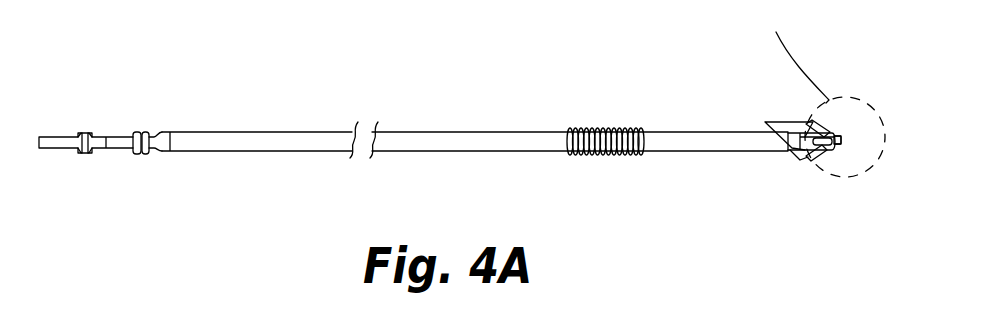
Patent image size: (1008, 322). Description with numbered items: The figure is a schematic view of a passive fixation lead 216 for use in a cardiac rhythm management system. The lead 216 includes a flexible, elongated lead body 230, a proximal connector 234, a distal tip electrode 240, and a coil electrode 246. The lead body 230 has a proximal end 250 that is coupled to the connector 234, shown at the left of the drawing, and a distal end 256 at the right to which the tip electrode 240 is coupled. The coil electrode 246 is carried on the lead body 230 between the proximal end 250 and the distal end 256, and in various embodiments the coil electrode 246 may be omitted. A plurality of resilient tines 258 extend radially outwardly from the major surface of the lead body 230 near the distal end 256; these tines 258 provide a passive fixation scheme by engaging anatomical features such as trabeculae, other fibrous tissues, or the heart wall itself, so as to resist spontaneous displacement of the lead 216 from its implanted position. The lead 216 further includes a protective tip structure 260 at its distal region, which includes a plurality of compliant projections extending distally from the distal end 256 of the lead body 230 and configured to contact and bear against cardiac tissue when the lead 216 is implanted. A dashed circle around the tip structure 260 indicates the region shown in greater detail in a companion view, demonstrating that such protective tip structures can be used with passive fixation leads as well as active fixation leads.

The passive fixation lead 216 is at (214, 74).
The proximal connector 234 is at (109, 126).
The lead body 230 is at (465, 128).
The proximal end 250 is at (193, 148).
The coil electrode 246 is at (590, 150).
The distal tip electrode 240 is at (843, 148).
The resilient tines 258 is at (766, 122).
The distal end 256 is at (790, 151).
The protective tip structure 260 is at (834, 131).